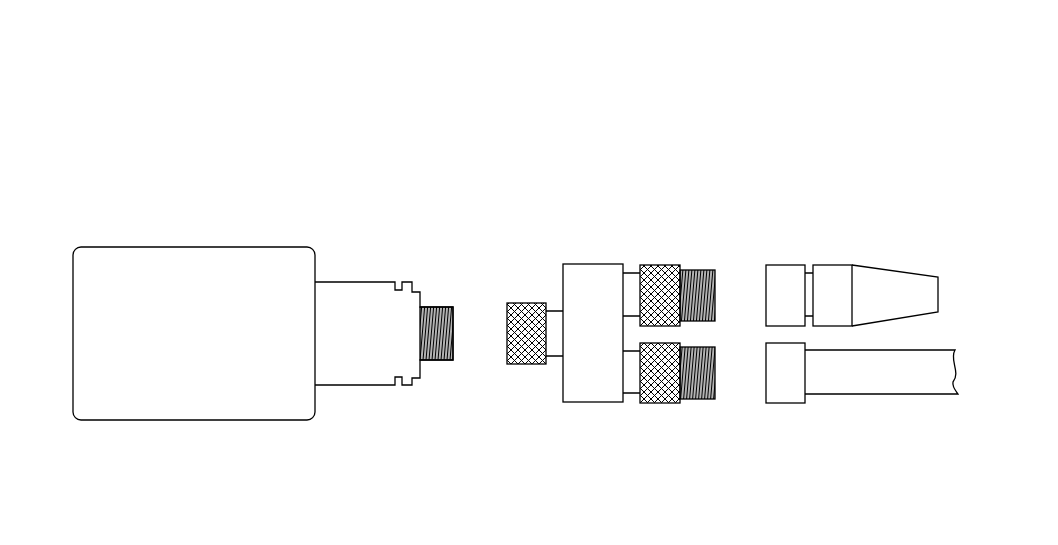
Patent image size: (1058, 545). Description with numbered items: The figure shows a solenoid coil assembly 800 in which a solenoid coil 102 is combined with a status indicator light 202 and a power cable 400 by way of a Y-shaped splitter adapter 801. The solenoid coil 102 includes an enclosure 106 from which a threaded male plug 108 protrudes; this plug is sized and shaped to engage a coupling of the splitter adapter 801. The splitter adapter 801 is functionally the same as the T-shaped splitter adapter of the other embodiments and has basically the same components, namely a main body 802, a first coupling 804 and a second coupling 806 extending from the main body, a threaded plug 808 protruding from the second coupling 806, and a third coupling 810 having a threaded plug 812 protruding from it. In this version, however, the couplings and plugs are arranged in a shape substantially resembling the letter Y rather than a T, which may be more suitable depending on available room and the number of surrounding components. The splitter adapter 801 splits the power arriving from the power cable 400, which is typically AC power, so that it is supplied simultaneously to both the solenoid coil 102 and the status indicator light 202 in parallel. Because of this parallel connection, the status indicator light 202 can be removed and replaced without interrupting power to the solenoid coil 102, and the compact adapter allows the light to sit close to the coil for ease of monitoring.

The solenoid coil assembly 800 is at (107, 101).
The solenoid coil 102 is at (70, 239).
The enclosure 106 is at (196, 247).
The threaded male plug 108 is at (436, 307).
The splitter adapter 801 is at (546, 264).
The main body 802 is at (610, 337).
The first coupling 804 is at (527, 303).
The second coupling 806 is at (660, 265).
The threaded plug 808 is at (705, 270).
The third coupling 810 is at (658, 403).
The threaded plug 812 is at (705, 399).
The status indicator light 202 is at (861, 254).
The power cable 400 is at (861, 407).